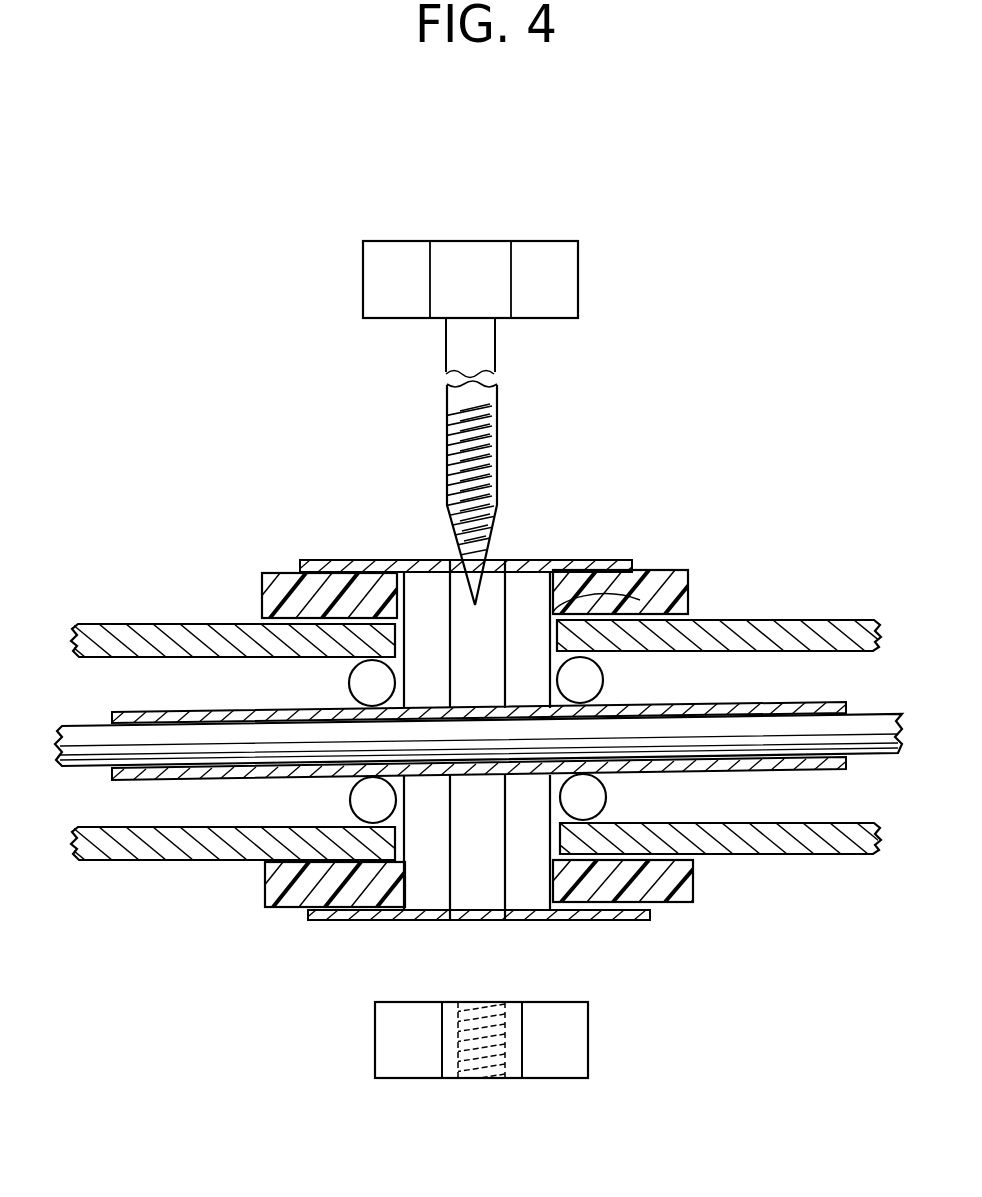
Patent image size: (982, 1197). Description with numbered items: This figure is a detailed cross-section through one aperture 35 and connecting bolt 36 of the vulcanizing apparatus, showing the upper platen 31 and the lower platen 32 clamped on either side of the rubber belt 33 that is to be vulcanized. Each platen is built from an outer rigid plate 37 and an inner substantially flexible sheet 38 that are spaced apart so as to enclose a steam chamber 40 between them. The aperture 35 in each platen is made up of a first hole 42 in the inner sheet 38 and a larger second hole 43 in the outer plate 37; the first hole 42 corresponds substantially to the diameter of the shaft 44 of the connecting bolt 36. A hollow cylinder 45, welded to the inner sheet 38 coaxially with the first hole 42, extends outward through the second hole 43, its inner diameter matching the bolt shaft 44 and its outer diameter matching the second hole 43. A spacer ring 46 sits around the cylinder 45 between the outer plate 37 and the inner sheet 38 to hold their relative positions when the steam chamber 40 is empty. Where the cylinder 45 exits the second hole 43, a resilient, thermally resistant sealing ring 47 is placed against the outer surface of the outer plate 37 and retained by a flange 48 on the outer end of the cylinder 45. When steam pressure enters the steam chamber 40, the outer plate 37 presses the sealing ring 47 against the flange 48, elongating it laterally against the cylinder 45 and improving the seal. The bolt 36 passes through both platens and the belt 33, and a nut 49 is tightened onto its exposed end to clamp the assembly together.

The upper platen 31 is at (175, 590).
The lower platen 32 is at (175, 880).
The rubber belt 33 is at (56, 740).
The aperture 35 is at (497, 545).
The connecting bolt 36 is at (578, 290).
The outer rigid plate 37 is at (158, 624).
The inner substantially flexible sheet 38 is at (170, 712).
The steam chamber 40 is at (108, 674).
The first hole 42 is at (498, 701).
The second hole 43 is at (610, 602).
The shaft 44 is at (497, 398).
The hollow cylinder 45 is at (420, 588).
The spacer ring 46 is at (357, 683).
The sealing ring 47 is at (262, 598).
The flange 48 is at (337, 560).
The nut 49 is at (578, 1050).